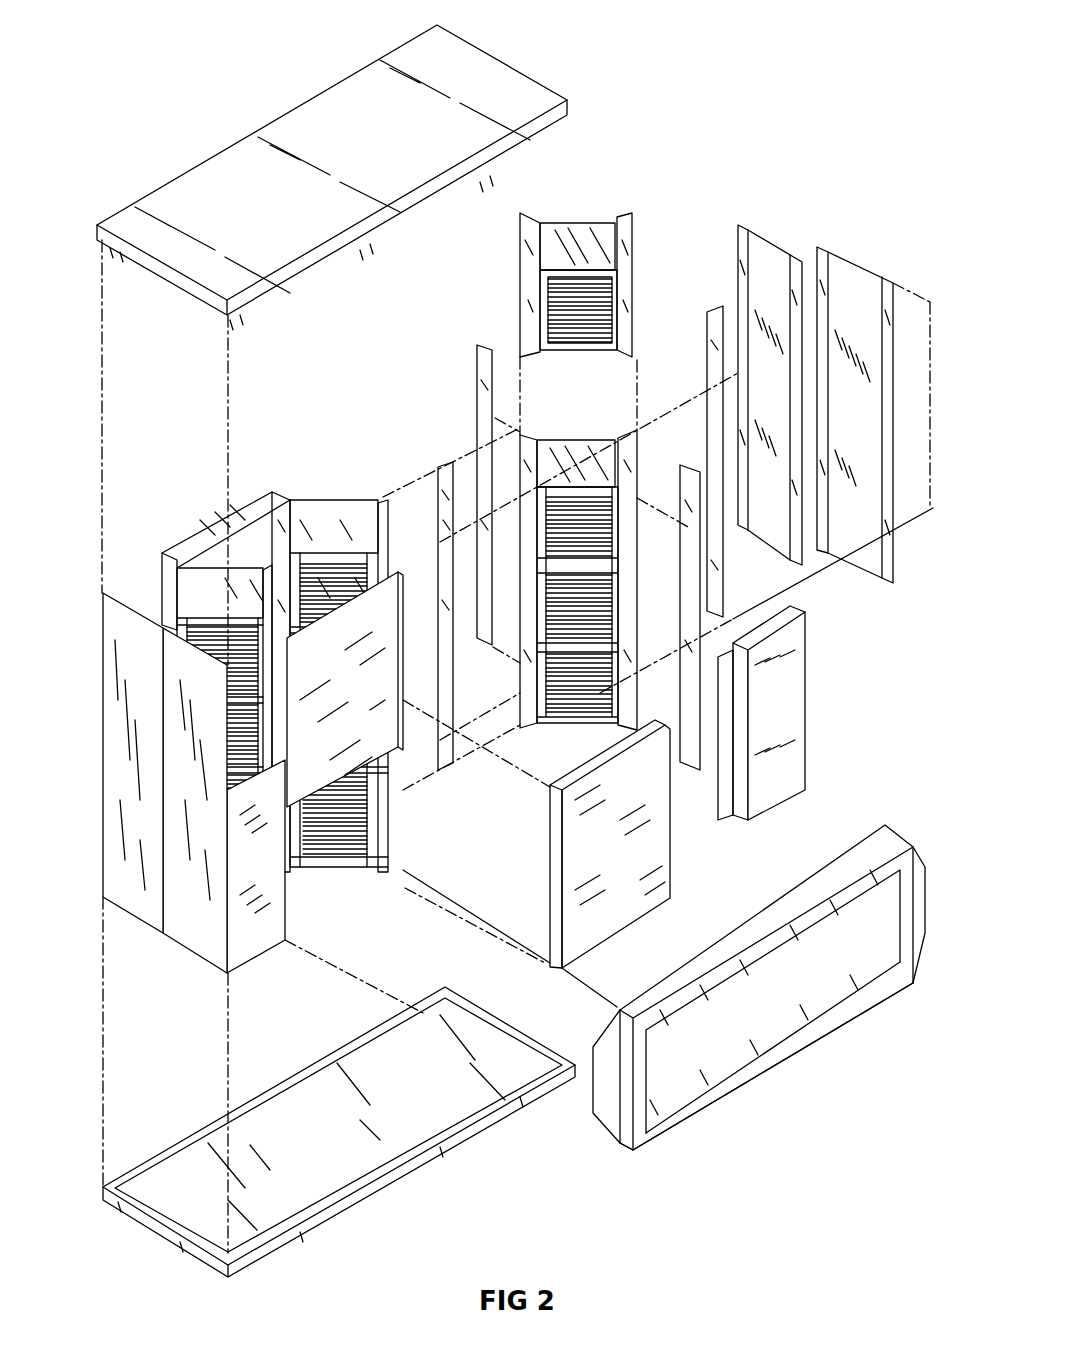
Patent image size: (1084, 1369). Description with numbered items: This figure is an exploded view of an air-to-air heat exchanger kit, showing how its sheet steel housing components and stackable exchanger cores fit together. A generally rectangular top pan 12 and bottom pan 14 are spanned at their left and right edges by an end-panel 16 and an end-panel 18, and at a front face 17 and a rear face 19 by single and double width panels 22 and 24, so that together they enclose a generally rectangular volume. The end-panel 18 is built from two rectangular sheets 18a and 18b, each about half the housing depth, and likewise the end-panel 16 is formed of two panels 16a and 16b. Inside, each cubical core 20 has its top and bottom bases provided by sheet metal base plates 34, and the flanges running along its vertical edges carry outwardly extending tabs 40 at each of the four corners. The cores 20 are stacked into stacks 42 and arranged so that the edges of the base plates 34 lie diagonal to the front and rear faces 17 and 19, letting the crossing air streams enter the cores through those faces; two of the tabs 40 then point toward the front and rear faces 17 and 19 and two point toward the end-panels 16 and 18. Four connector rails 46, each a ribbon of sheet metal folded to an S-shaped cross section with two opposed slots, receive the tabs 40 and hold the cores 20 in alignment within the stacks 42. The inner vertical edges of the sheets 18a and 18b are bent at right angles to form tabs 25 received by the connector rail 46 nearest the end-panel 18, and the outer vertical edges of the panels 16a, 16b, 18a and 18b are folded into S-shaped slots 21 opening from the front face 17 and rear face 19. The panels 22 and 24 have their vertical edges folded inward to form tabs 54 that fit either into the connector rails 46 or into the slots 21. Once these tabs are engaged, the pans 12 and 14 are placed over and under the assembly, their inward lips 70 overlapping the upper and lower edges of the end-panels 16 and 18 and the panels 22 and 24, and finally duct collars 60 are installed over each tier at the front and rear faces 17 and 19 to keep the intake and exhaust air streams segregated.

The top pan 12 is at (482, 80).
The bottom pan 14 is at (339, 1132).
The end-panel 16 is at (148, 814).
The panel 16a is at (133, 763).
The panel 16b is at (195, 800).
The front face 17 is at (759, 1021).
The end-panel 18 is at (817, 464).
The rectangular sheet 18a is at (780, 238).
The rectangular sheet 18b is at (857, 257).
The rear face 19 is at (286, 66).
The cubical core 20 is at (325, 515).
The slot 21 is at (738, 225).
The panel 22 is at (516, 789).
The panel 24 is at (478, 770).
The tab 25 is at (838, 555).
The base plate 34 is at (567, 230).
The tab 40 is at (627, 228).
The stack 42 is at (627, 207).
The connector rail 46 is at (710, 312).
The tab 54 is at (557, 872).
The duct collar 60 is at (660, 1140).
The lip 70 is at (262, 1097).